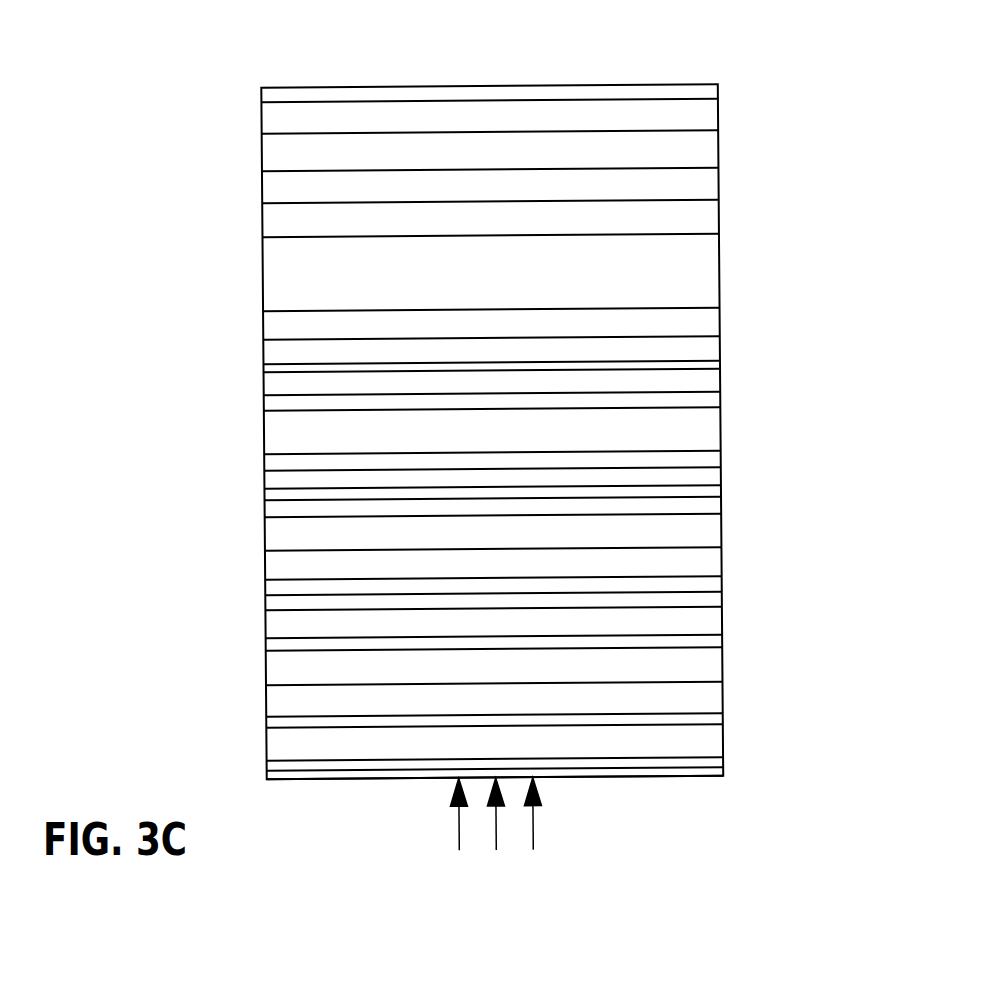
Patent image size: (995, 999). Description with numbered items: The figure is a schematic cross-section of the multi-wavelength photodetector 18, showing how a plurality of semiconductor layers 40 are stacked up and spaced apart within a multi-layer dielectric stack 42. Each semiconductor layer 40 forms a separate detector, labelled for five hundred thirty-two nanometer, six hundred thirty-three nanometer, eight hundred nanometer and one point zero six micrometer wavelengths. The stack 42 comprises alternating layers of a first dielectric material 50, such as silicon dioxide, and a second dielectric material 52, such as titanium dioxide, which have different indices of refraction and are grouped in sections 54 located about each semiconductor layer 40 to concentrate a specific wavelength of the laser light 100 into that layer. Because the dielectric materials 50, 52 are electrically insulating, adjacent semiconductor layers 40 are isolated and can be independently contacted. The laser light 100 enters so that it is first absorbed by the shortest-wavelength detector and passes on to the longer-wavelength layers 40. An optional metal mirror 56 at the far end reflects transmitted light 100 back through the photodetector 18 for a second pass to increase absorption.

The multi-wavelength photodetector 18 is at (649, 788).
The semiconductor layer 40 is at (264, 270).
The multi-layer dielectric stack 42 is at (760, 99).
The first dielectric material 50 is at (463, 441).
The second dielectric material 52 is at (750, 461).
The section 54 is at (200, 100).
The metal mirror 56 is at (491, 85).
The laser light 100 is at (455, 824).